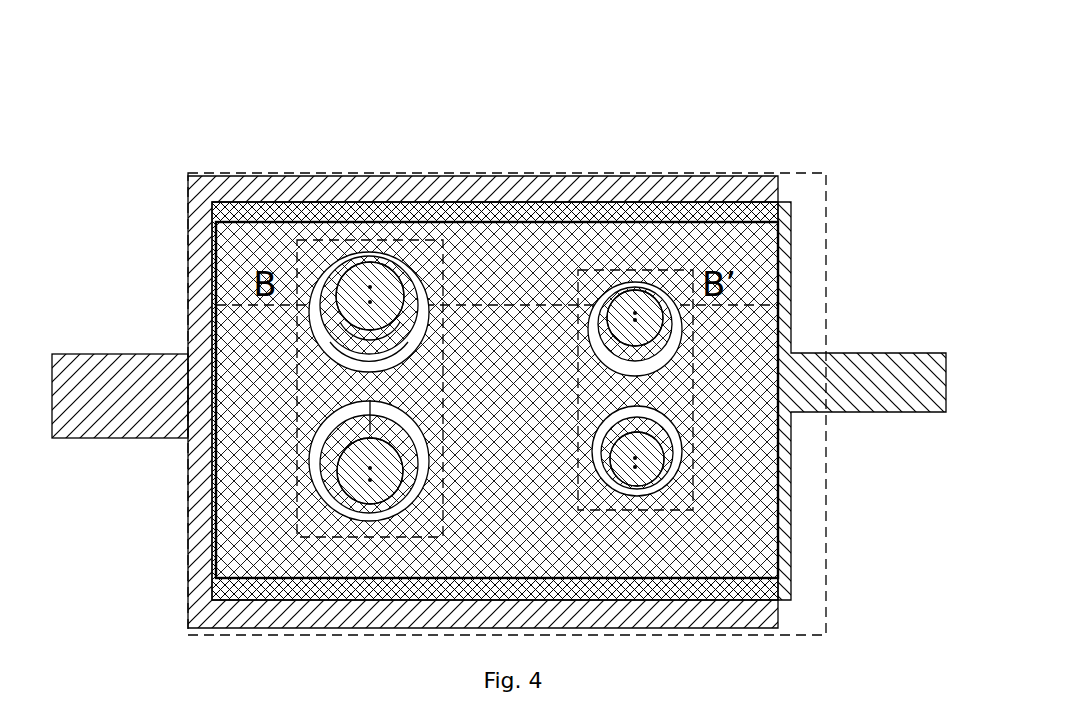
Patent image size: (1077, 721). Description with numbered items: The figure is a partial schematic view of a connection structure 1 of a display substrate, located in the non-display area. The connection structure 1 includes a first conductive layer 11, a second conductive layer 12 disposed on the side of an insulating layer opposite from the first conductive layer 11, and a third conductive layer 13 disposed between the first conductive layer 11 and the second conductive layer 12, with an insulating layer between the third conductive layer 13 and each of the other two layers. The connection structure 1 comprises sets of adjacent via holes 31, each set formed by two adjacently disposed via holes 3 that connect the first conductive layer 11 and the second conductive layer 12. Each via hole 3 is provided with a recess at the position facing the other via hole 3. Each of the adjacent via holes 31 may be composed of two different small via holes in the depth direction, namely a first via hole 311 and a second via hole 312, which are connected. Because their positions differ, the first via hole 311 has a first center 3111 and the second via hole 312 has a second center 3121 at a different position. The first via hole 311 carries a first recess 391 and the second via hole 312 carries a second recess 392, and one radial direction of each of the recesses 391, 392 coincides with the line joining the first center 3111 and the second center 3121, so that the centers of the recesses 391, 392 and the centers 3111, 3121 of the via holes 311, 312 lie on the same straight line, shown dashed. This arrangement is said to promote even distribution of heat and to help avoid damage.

The connection structure 1 is at (188, 176).
The first conductive layer 11 is at (215, 178).
The second conductive layer 12 is at (723, 220).
The third conductive layer 13 is at (305, 202).
The via hole 3 is at (644, 282).
The set of adjacent via holes 31 is at (435, 262).
The first via hole 311 is at (390, 255).
The second via hole 312 is at (345, 258).
The first center 3111 is at (338, 478).
The second center 3121 is at (342, 500).
The first recess 391 is at (342, 356).
The second recess 392 is at (368, 328).